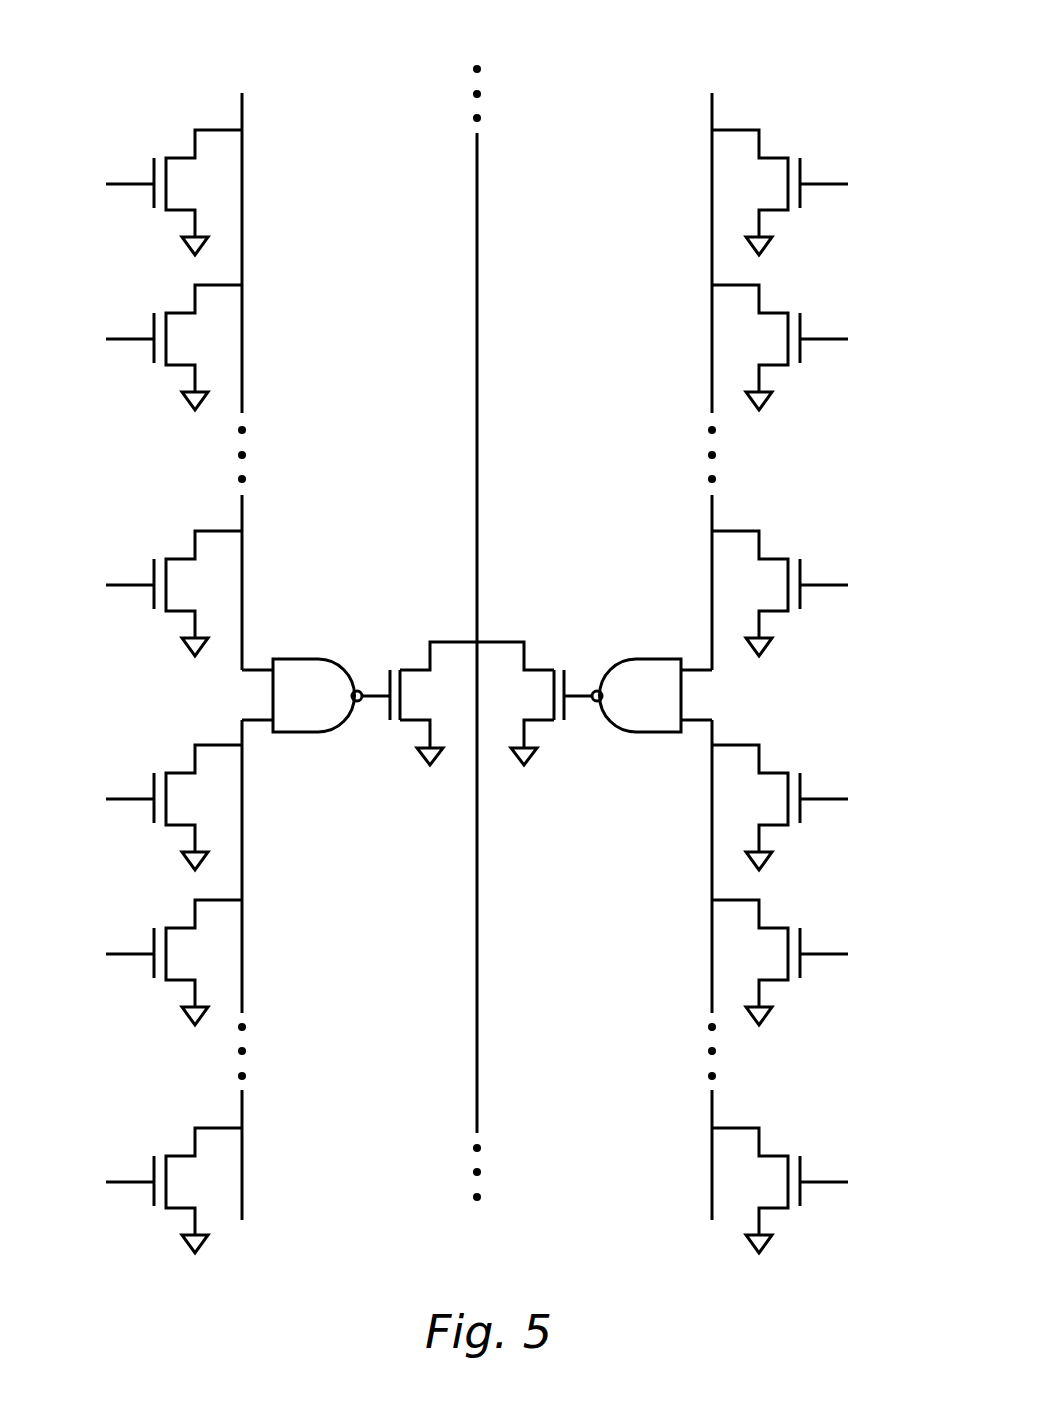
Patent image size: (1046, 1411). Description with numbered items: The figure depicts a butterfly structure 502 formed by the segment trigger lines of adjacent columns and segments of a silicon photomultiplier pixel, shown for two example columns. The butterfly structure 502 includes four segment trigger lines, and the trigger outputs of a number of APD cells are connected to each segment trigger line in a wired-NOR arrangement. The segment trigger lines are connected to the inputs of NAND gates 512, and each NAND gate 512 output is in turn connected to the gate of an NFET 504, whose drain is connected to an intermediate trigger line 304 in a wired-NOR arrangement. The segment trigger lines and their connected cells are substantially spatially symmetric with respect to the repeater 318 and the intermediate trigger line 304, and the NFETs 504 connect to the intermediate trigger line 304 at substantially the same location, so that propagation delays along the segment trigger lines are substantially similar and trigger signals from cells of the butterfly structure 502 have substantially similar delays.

The butterfly structure 502 is at (612, 68).
The intermediate trigger line 304 is at (477, 888).
The repeater 318 is at (560, 593).
The NFET 504 is at (397, 732).
The NAND gate 512 is at (325, 662).